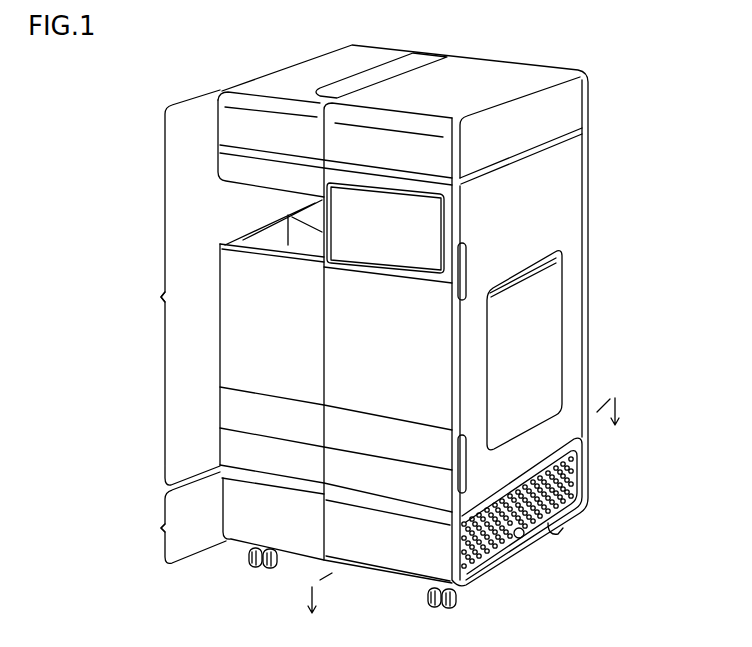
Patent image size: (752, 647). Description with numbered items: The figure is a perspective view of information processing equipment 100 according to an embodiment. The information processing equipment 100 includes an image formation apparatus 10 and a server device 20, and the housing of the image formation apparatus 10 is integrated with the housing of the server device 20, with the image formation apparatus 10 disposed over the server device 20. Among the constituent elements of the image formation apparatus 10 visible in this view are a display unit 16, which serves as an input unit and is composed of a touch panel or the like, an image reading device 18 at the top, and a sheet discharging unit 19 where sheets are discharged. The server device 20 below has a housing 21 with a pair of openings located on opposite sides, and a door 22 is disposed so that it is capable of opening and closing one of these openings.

The information processing equipment 100 is at (243, 65).
The image formation apparatus 10 is at (150, 297).
The server device 20 is at (150, 528).
The display unit 16 is at (385, 229).
The image reading device 18 is at (402, 147).
The sheet discharging unit 19 is at (300, 206).
The housing 21 is at (392, 543).
The door 22 is at (540, 532).